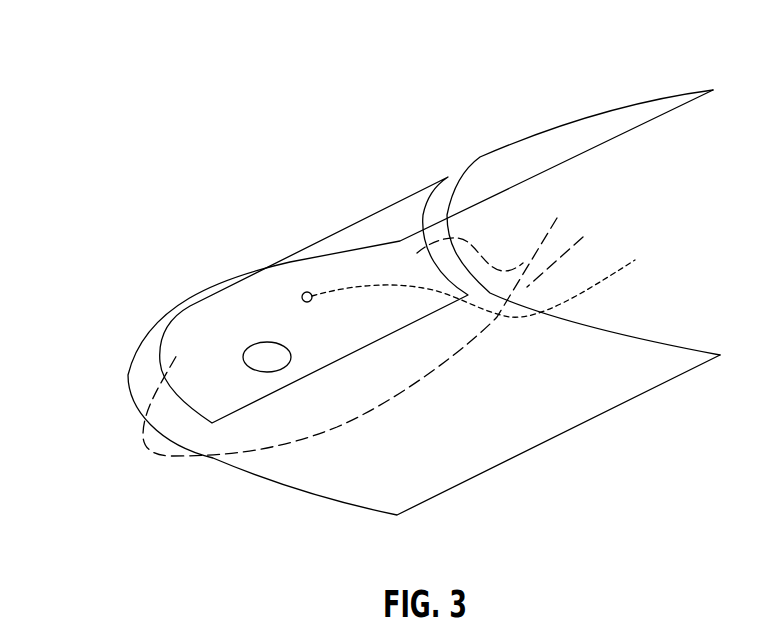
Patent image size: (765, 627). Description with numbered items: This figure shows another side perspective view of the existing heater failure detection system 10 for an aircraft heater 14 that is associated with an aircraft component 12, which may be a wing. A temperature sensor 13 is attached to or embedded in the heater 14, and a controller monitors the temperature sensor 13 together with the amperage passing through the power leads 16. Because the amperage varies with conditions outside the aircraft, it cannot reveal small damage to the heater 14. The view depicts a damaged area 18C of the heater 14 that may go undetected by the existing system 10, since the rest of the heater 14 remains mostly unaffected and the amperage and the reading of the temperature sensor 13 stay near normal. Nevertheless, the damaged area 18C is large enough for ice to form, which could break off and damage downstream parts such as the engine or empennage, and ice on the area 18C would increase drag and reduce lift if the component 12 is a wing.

The heater failure detection system 10 is at (96, 61).
The aircraft component 12 is at (669, 93).
The temperature sensor 13 is at (309, 291).
The aircraft heater 14 is at (268, 287).
The power leads 16 is at (523, 265).
The damaged area 18C is at (253, 355).